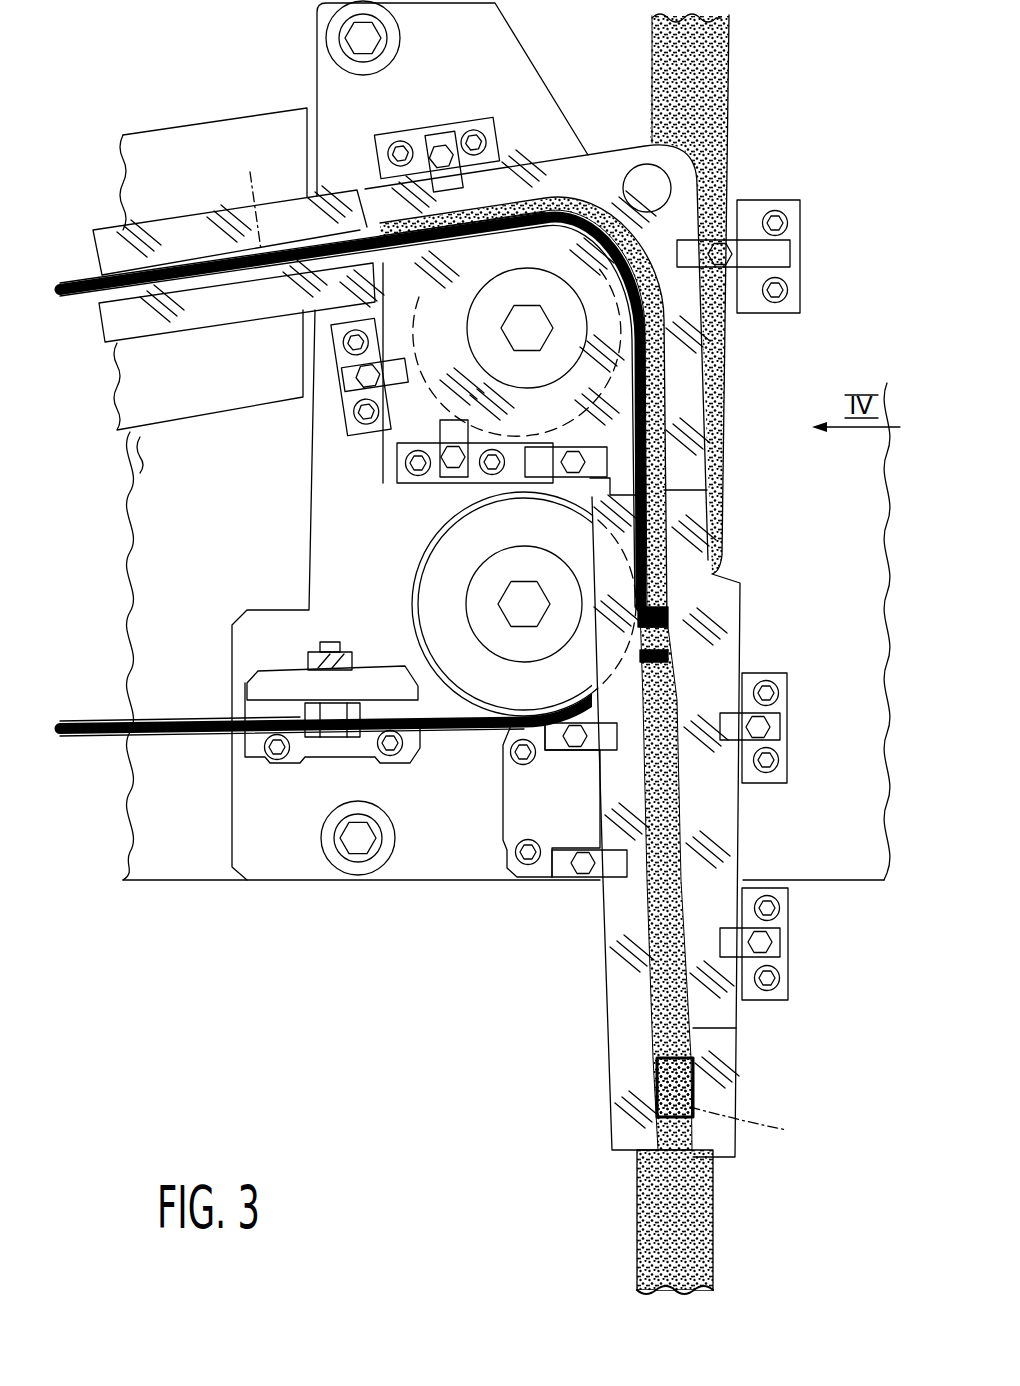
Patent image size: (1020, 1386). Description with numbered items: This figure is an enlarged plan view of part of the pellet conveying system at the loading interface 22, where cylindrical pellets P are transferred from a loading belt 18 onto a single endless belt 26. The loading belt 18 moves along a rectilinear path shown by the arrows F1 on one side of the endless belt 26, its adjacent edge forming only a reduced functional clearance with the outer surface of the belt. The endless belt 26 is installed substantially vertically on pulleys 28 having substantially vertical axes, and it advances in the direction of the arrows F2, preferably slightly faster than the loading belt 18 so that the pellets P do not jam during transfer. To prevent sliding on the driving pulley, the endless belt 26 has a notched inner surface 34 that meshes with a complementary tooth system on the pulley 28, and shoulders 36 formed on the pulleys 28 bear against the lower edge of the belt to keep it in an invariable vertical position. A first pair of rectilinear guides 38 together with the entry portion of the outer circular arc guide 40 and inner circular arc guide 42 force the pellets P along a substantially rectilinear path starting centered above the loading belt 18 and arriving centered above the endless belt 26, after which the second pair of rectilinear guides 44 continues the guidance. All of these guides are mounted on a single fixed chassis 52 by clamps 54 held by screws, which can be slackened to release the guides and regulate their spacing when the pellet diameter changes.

The loading belt 18 is at (633, 1266).
The loading interface 22 is at (353, 912).
The endless belt 26 is at (98, 748).
The pulleys 28 is at (463, 557).
The notched inner surface 34 is at (187, 717).
The shoulders 36 is at (417, 633).
The first pair of rectilinear guides 38 is at (627, 997).
The outer circular arc guide 40 is at (597, 182).
The inner circular arc guide 42 is at (355, 425).
The second pair of rectilinear guides 44 is at (207, 305).
The fixed chassis 52 is at (160, 893).
The clamps 54 is at (443, 135).
The pellets P is at (436, 646).
The loading belt movement arrows F1 is at (740, 123).
The endless belt advance arrows F2 is at (66, 308).